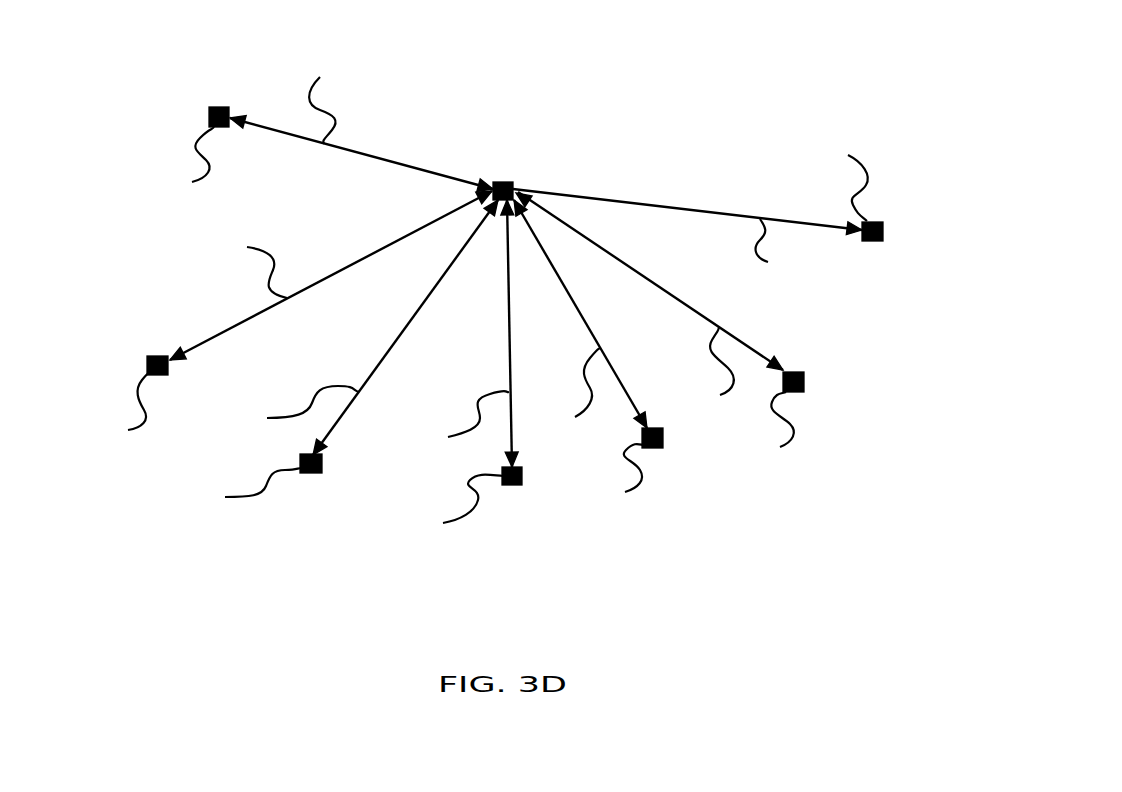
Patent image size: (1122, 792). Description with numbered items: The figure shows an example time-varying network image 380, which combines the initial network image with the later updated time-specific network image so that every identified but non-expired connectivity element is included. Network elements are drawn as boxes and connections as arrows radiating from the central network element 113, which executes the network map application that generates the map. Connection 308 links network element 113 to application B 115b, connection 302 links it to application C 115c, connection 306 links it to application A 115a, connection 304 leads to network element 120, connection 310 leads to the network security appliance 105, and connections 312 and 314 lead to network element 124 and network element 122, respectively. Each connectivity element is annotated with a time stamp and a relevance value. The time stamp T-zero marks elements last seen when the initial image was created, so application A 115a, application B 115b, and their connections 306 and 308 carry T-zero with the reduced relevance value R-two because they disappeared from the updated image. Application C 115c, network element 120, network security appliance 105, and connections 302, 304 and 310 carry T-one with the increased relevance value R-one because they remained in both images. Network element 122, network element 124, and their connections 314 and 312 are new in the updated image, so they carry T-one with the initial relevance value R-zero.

The time-varying network image 380 is at (120, 60).
The network element 113 is at (490, 183).
The application A 115a is at (514, 486).
The application B 115b is at (209, 115).
The application C 115c is at (147, 367).
The network element 120 is at (313, 473).
The network element 122 is at (883, 230).
The network element 124 is at (662, 447).
The network security appliance 105 is at (805, 380).
The connection 302 is at (335, 272).
The connection 304 is at (432, 292).
The connection 306 is at (509, 353).
The connection 308 is at (284, 131).
The connection 310 is at (665, 291).
The connection 312 is at (612, 202).
The connection 314 is at (577, 308).